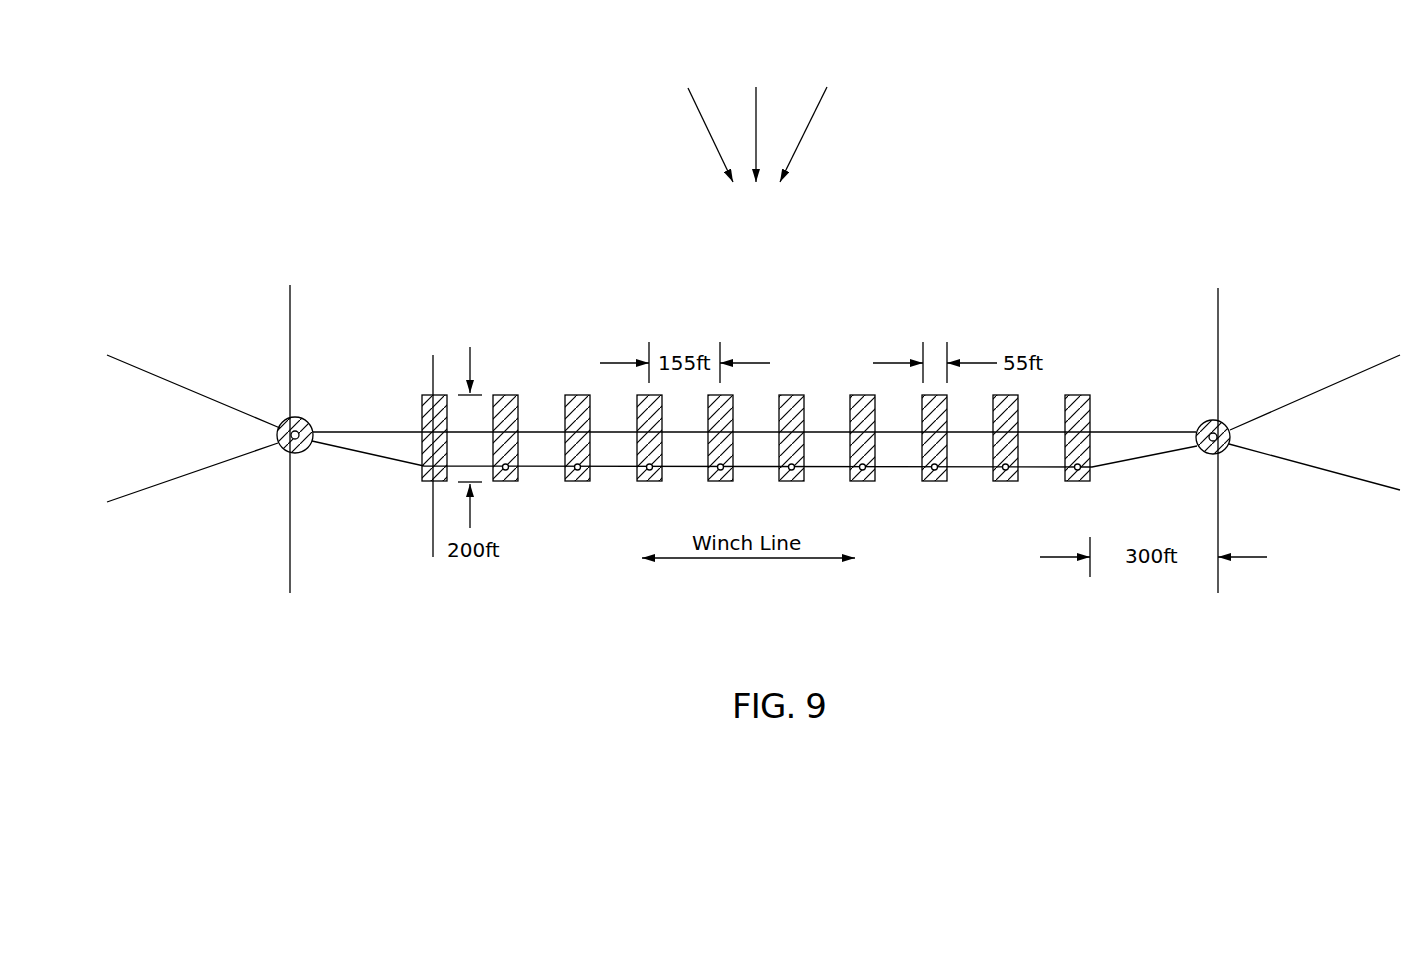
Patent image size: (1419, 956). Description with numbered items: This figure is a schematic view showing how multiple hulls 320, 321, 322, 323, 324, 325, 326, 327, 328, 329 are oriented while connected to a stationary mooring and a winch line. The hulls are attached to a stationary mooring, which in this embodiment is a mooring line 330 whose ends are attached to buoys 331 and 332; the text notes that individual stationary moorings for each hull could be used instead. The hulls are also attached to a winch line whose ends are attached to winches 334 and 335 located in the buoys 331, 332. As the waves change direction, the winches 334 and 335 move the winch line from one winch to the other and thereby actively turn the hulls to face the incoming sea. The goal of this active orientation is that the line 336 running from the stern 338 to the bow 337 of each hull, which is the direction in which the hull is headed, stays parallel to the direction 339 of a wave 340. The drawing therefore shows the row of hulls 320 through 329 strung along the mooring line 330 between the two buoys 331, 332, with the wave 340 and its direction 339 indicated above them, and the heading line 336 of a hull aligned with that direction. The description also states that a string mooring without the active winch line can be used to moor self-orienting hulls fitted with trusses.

The hull 320 is at (424, 470).
The hull 321 is at (519, 483).
The hull 322 is at (589, 483).
The hull 323 is at (659, 483).
The hull 324 is at (730, 483).
The hull 325 is at (801, 483).
The hull 326 is at (872, 483).
The hull 327 is at (944, 483).
The hull 328 is at (1015, 483).
The hull 329 is at (1087, 483).
The mooring line 330 is at (355, 430).
The buoy 331 is at (277, 412).
The buoy 332 is at (1110, 242).
The winch 334 is at (293, 453).
The winch 335 is at (1210, 457).
The line from stern to bow 336 is at (433, 388).
The bow 337 is at (422, 396).
The stern 338 is at (425, 484).
The direction of wave 339 is at (763, 198).
The wave 340 is at (887, 116).